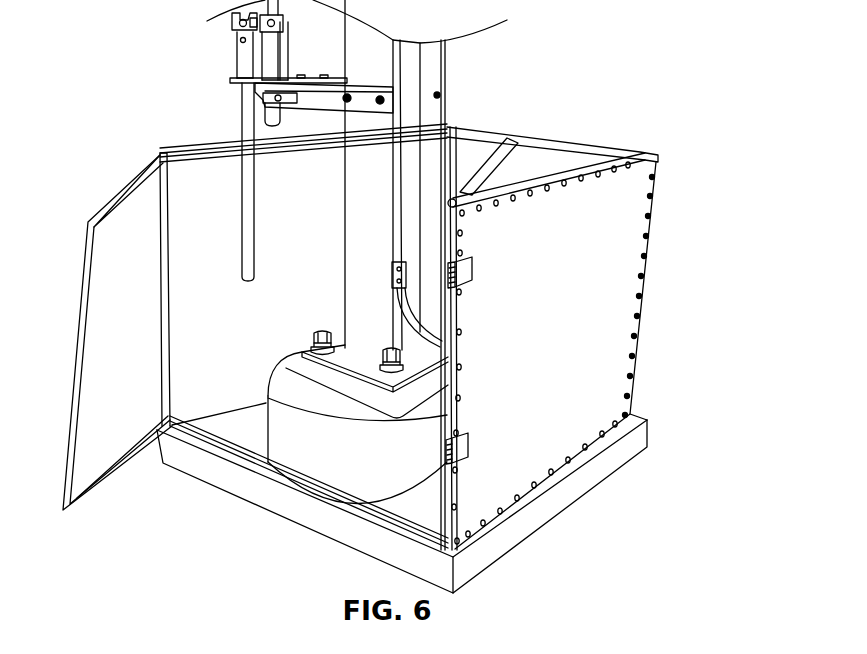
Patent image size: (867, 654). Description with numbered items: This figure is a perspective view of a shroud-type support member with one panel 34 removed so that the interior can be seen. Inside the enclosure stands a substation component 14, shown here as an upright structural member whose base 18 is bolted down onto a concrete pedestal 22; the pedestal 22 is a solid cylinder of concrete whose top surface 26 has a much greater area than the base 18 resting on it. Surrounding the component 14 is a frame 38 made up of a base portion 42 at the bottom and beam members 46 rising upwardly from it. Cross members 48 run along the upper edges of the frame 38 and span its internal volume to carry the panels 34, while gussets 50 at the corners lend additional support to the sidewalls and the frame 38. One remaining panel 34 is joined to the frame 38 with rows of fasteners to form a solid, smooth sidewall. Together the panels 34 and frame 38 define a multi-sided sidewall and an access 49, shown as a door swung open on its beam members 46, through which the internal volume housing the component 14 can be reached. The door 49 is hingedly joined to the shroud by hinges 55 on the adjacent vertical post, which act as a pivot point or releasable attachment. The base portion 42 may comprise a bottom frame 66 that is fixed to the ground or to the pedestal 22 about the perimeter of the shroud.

The substation component 14 is at (447, 63).
The base 18 is at (340, 333).
The concrete pedestal 22 is at (267, 382).
The top surface 26 is at (283, 370).
The panel 34 is at (290, 239).
The frame 38 is at (167, 200).
The base portion 42 is at (640, 443).
The beam member 46 is at (127, 217).
The cross member 48 is at (228, 150).
The access 49 is at (144, 313).
The gusset 50 is at (640, 153).
The hinge 55 is at (474, 264).
The bottom frame 66 is at (472, 570).